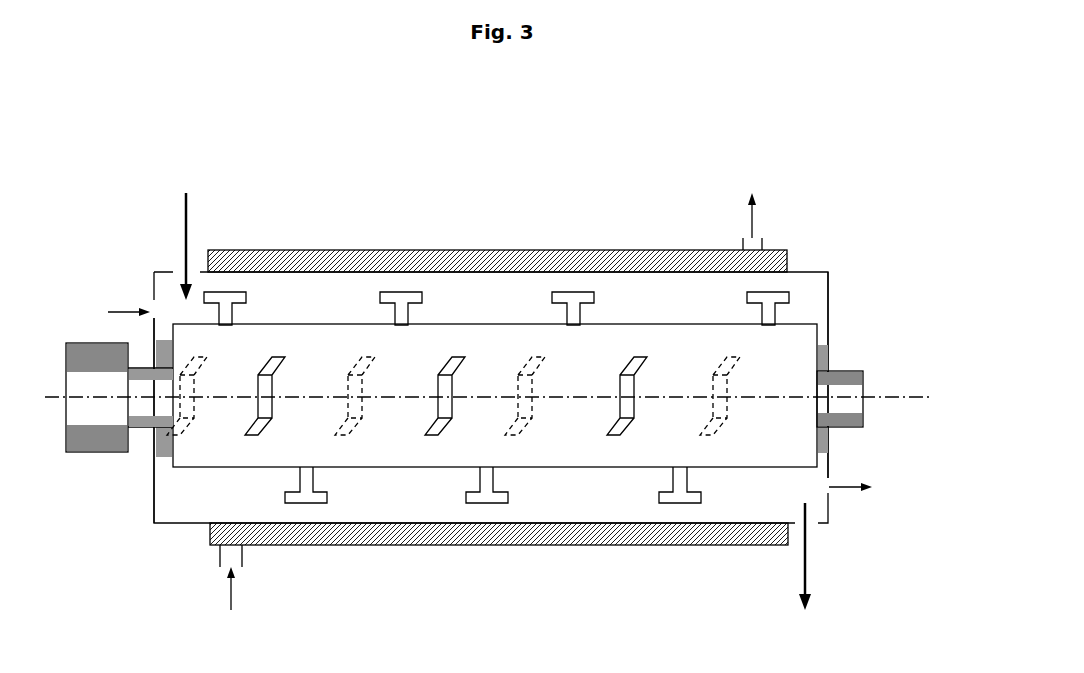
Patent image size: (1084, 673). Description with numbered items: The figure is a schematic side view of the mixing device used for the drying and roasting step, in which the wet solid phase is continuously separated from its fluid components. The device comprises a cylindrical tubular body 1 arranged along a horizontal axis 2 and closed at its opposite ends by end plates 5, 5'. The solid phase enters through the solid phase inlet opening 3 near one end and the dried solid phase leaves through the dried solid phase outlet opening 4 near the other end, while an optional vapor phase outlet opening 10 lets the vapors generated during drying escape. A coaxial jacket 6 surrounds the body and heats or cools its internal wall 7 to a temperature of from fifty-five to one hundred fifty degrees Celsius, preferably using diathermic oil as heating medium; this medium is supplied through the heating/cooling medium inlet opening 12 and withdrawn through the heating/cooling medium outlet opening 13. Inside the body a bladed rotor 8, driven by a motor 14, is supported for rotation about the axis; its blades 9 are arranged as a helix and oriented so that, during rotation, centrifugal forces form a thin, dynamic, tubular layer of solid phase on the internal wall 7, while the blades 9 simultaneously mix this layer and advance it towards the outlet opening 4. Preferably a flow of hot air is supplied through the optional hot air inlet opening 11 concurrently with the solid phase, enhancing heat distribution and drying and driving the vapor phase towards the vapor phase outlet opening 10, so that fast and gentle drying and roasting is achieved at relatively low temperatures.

The cylindrical tubular body 1 is at (472, 403).
The horizontal axis 2 is at (503, 397).
The solid phase inlet opening 3 is at (186, 234).
The dried solid phase outlet opening 4 is at (805, 576).
The end plate 5 is at (153, 420).
The end plate 5' is at (836, 375).
The coaxial jacket 6 is at (461, 250).
The internal wall of tubular body 7 is at (500, 272).
The bladed rotor 8 is at (534, 343).
The blades 9 is at (712, 380).
The vapor phase outlet opening 10 is at (866, 490).
The hot air inlet opening 11 is at (115, 312).
The heating/cooling medium inlet opening 12 is at (234, 594).
The heating/cooling medium outlet opening 13 is at (752, 209).
The motor 14 is at (464, 397).